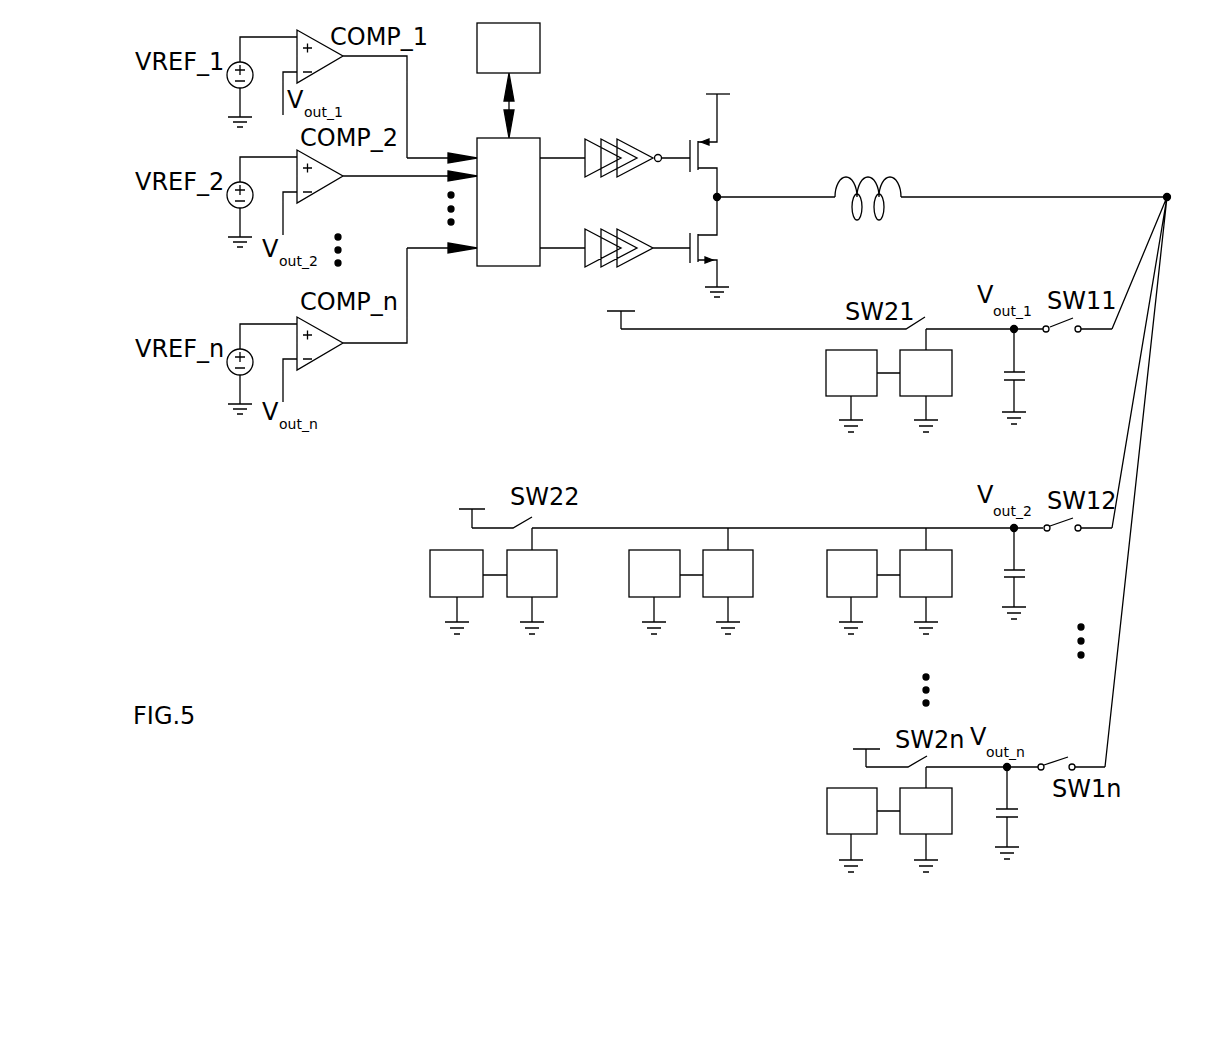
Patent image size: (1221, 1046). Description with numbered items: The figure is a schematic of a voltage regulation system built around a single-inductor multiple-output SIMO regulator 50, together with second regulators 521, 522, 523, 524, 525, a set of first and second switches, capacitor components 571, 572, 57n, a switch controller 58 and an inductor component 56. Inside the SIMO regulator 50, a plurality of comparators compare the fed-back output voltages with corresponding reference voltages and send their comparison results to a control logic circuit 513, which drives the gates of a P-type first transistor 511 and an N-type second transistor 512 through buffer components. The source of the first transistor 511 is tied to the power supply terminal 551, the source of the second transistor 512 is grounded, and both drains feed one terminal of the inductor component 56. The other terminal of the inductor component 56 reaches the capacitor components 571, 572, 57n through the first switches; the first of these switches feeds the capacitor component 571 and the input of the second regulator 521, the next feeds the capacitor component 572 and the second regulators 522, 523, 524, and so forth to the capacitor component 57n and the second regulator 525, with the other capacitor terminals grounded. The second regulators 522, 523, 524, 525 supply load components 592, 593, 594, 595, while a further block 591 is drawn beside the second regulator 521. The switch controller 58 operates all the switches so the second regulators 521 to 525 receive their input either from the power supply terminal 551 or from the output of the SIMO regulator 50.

The SIMO regulator 50 is at (468, 313).
The switch controller 58 is at (541, 46).
The control logic circuit 513 is at (533, 138).
The power supply terminal 551 is at (740, 90).
The first transistor 511 is at (773, 156).
The second transistor 512 is at (773, 267).
The inductor component 56 is at (894, 167).
The capacitor component 571 is at (1070, 392).
The capacitor component 572 is at (1071, 591).
The capacitor component 57n is at (1063, 829).
The second regulator 521 is at (945, 396).
The second regulator 522 is at (945, 597).
The second regulator 523 is at (746, 597).
The second regulator 524 is at (550, 597).
The second regulator 525 is at (945, 834).
The first sensing unit 591 is at (832, 396).
The load component 592 is at (870, 597).
The load component 593 is at (673, 597).
The load component 594 is at (475, 597).
The load component 595 is at (832, 834).